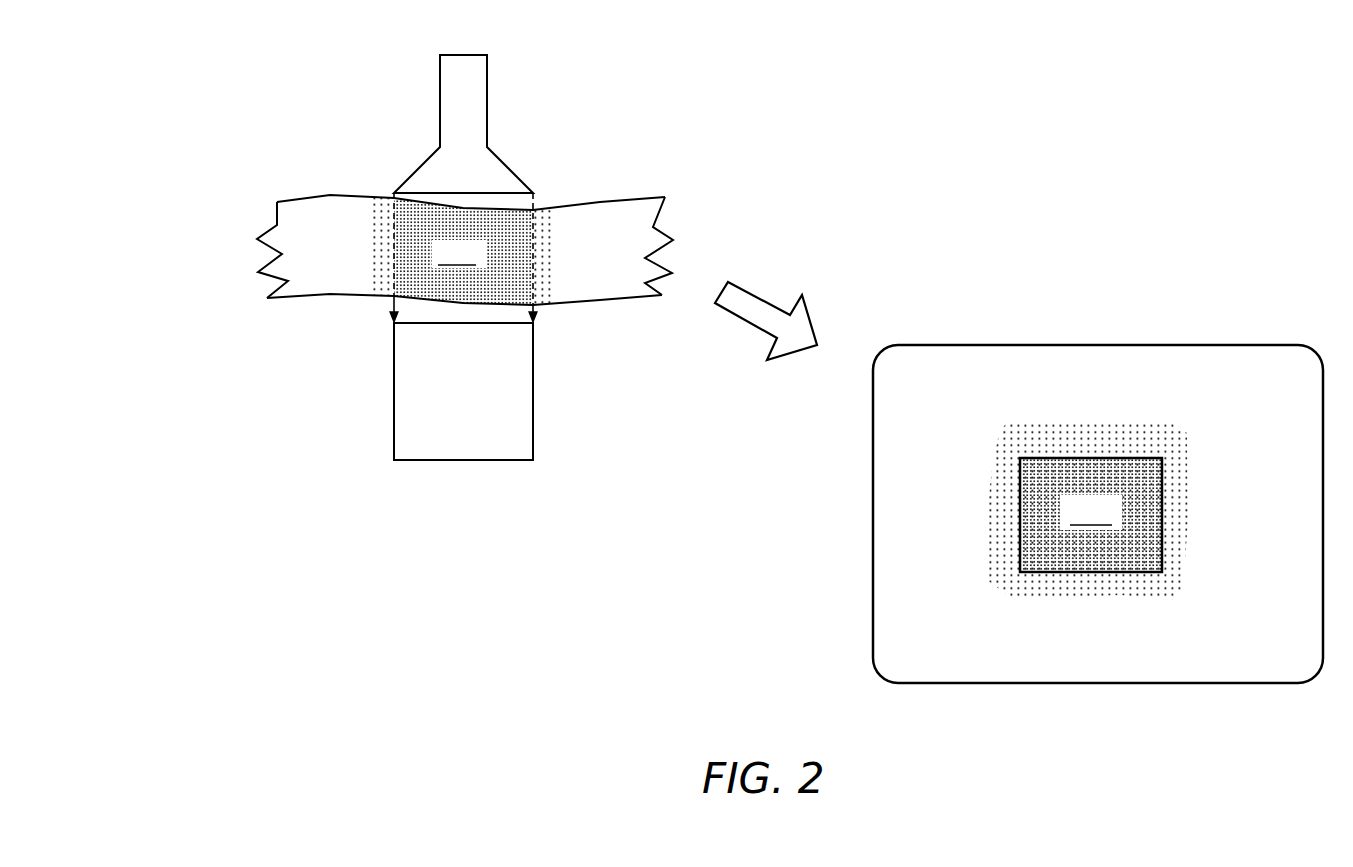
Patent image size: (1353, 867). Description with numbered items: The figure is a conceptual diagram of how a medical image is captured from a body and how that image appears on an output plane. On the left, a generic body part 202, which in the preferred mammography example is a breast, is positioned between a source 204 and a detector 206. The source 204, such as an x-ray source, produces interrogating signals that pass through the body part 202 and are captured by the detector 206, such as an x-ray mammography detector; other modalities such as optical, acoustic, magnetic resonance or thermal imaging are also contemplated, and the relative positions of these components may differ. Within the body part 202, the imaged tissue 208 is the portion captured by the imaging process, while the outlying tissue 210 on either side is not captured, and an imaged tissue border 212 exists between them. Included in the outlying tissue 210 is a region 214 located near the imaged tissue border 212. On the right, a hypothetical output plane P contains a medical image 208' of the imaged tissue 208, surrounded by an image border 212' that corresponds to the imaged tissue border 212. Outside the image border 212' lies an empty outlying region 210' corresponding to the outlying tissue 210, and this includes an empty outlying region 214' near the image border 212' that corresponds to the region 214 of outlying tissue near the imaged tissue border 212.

The body part 202 is at (255, 207).
The source 204 is at (487, 65).
The detector 206 is at (477, 460).
The imaged tissue 208 is at (463, 251).
The outlying tissue 210 is at (469, 147).
The imaged tissue border 212 is at (461, 273).
The region 214 is at (465, 231).
The output plane P is at (998, 345).
The medical image 208' is at (1091, 515).
The empty outlying region 210' is at (1198, 620).
The image border 212' is at (1140, 510).
The empty outlying region near image border 214' is at (1087, 545).